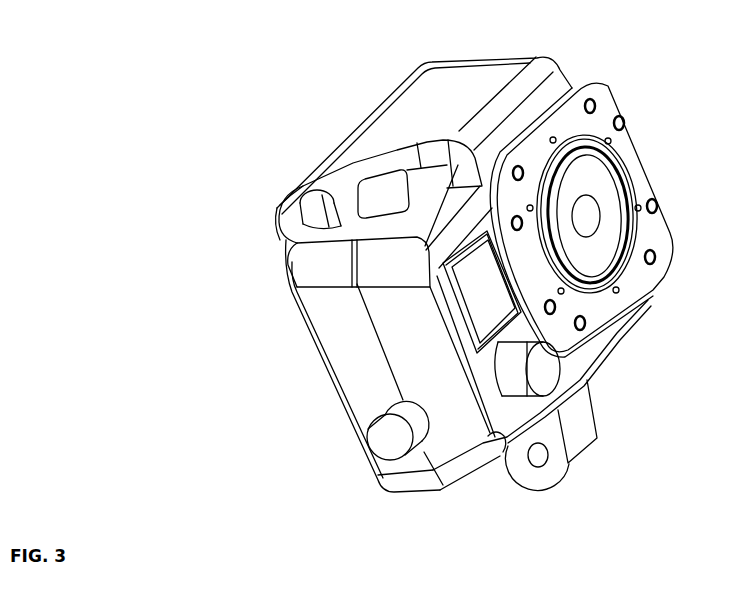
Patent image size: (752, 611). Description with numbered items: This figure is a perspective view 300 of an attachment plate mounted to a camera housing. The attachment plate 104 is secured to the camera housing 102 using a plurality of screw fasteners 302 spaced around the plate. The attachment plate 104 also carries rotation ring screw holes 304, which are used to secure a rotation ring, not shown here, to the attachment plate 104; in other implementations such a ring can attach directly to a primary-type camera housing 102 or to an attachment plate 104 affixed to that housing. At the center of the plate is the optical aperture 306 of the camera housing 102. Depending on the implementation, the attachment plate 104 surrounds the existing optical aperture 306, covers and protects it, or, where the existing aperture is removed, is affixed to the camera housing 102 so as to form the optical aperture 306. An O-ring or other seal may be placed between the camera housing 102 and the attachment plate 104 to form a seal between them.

The camera system 300 is at (74, 444).
The camera housing 102 is at (338, 332).
The attachment plate 104 is at (598, 101).
The screw fasteners 302 is at (657, 205).
The rotation ring screw holes 304 is at (619, 292).
The optical aperture 306 is at (604, 217).